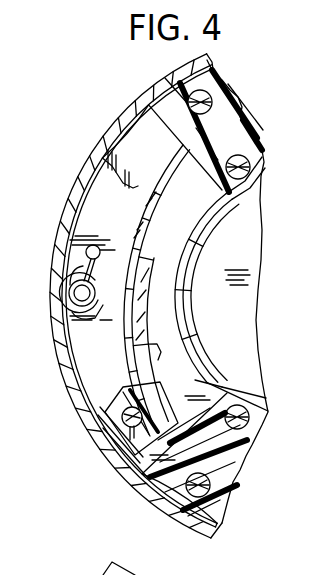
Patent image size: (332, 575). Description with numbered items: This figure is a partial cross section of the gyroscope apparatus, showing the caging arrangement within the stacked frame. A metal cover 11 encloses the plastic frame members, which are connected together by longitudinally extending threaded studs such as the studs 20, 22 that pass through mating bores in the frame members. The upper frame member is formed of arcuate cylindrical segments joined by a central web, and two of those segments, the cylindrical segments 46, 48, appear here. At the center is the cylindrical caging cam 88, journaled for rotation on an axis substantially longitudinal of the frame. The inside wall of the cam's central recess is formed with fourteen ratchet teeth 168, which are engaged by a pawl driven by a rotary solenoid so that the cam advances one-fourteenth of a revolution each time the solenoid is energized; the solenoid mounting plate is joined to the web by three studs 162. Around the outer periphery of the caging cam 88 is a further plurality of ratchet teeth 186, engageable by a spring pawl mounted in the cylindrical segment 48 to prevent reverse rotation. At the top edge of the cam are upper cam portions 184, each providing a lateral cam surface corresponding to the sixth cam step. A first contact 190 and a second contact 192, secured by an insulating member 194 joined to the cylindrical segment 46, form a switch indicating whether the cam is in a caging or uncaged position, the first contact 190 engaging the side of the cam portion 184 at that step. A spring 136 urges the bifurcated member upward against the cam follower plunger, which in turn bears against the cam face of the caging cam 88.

The metal cover 11 is at (88, 172).
The stud 20 is at (180, 519).
The stud 22 is at (173, 75).
The cylindrical segment 46 is at (158, 480).
The cylindrical segment 48 is at (150, 103).
The caging cam 88 is at (157, 308).
The spring 136 is at (72, 298).
The studs 162 is at (250, 164).
The ratchet teeth 168 is at (199, 360).
The upper cam portion 184 is at (158, 349).
The ratchet teeth 186 is at (131, 241).
The first contact 190 is at (110, 369).
The second contact 192 is at (100, 418).
The insulating member 194 is at (113, 467).